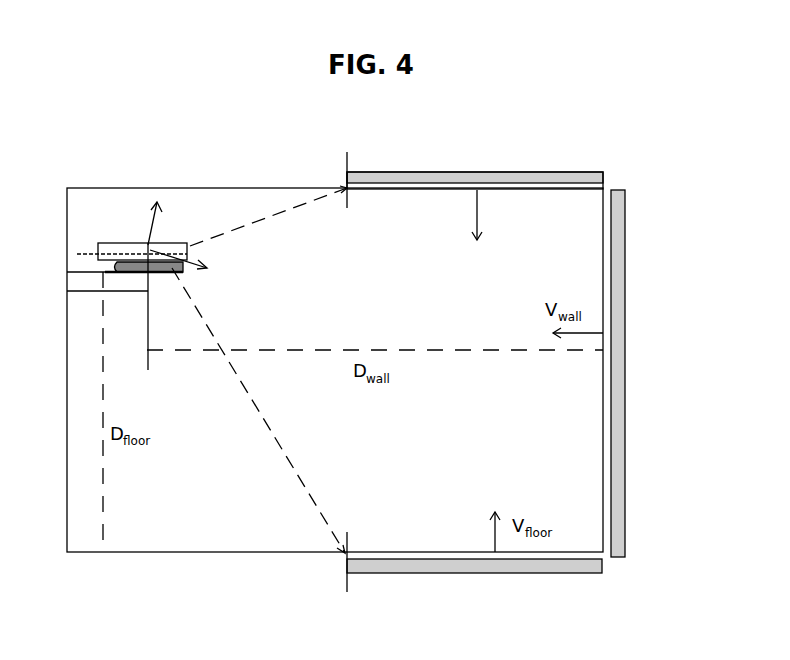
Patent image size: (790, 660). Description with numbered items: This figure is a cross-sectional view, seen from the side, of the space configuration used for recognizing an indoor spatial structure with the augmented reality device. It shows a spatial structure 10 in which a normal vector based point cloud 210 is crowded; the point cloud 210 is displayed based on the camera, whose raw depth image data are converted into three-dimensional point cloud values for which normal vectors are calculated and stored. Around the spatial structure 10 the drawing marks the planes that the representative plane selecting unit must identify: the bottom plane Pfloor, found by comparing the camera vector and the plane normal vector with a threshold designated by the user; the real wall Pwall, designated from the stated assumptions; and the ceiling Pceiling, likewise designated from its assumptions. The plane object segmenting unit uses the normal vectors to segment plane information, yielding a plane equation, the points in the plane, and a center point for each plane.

The spatial structure 10 is at (243, 188).
The point cloud 210 is at (135, 245).
The ceiling Pceiling is at (475, 191).
The real wall Pwall is at (638, 373).
The bottom plane Pfloor is at (474, 560).